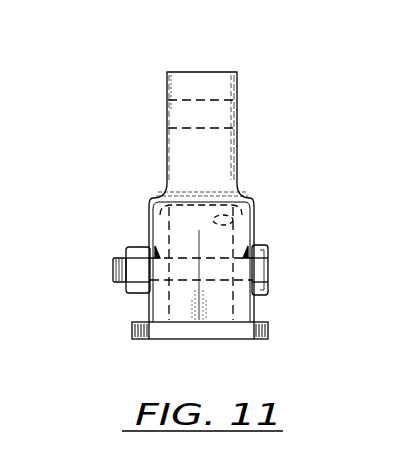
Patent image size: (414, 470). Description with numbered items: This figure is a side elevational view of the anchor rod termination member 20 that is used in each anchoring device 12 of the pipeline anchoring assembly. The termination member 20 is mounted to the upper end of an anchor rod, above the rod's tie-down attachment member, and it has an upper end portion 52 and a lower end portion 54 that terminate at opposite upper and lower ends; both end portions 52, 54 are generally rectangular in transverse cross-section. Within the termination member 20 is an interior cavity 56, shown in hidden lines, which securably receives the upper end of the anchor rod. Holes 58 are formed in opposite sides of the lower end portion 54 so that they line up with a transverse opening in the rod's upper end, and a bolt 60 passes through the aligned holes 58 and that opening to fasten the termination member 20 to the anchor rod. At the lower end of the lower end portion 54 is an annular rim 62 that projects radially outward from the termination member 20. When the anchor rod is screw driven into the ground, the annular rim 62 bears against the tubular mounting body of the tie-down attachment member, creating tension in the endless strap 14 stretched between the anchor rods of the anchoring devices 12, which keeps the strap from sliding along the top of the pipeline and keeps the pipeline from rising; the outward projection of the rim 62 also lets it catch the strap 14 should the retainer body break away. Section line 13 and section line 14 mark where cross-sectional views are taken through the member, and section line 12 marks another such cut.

The anchoring device 12 is at (383, 13).
The section line 13- 13 is at (137, 305).
The endless strap 14 is at (157, 87).
The anchor rod termination member 20 is at (208, 64).
The upper end portion 52 is at (238, 150).
The lower end portion 54 is at (150, 214).
The interior cavity 56 is at (250, 208).
The holes 58 is at (150, 245).
The bolt 60 is at (268, 277).
The annular rim 62 is at (183, 340).